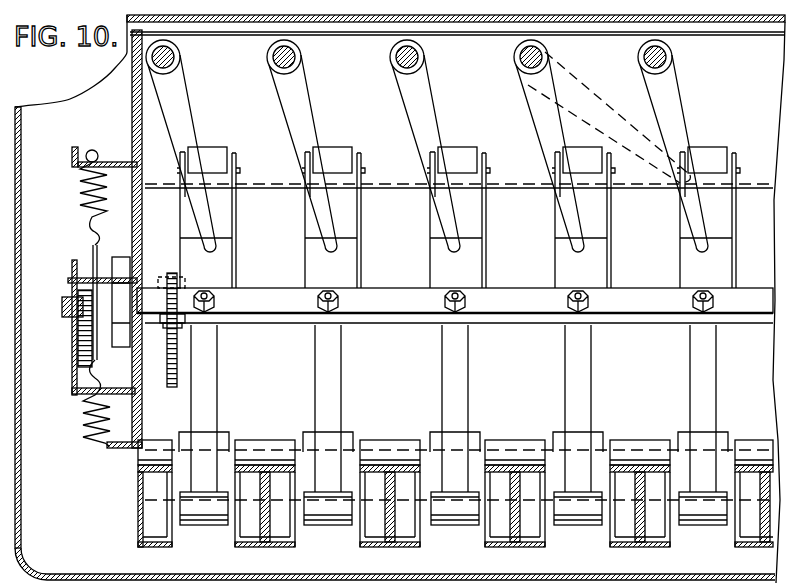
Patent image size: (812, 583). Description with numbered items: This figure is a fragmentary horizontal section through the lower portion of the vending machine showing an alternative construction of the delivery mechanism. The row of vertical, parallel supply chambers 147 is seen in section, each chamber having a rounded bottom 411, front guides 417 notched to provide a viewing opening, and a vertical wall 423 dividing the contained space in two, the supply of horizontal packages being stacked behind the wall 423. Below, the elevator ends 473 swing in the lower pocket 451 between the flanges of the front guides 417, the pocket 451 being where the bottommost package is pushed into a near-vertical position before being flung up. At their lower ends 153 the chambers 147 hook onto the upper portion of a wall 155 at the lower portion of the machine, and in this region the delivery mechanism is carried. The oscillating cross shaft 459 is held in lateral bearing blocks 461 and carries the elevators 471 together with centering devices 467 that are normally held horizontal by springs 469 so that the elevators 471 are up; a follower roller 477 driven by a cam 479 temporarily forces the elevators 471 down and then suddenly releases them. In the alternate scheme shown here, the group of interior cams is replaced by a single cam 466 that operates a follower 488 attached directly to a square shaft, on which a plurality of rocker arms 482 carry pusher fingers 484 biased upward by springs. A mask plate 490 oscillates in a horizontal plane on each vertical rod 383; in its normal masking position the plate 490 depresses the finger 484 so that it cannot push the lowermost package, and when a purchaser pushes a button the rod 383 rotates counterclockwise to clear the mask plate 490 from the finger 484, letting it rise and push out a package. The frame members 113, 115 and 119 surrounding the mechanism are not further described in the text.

The housing side wall 113 is at (21, 242).
The top frame member 115 is at (349, 36).
The bottom wall 119 is at (158, 580).
The supply chamber 147 is at (288, 523).
The lower end 153 is at (258, 447).
The wall 155 is at (310, 460).
The vertical rod 383 is at (181, 58).
The rounded bottom 411 is at (377, 462).
The front guide 417 is at (167, 543).
The vertical wall 423 is at (394, 468).
The pocket 451 is at (157, 508).
The cross shaft 459 is at (266, 318).
The lateral bearing block 461 is at (120, 258).
The cam 466 is at (170, 378).
The centering device 467 is at (95, 335).
The spring 469 is at (80, 203).
The elevator 471 is at (217, 390).
The elevator end 473 is at (205, 512).
The follower roller 477 is at (72, 298).
The cam 479 is at (88, 350).
The rocker arm 482 is at (428, 267).
The pusher finger 484 is at (458, 152).
The follower 488 is at (178, 332).
The mask plate 490 is at (283, 115).